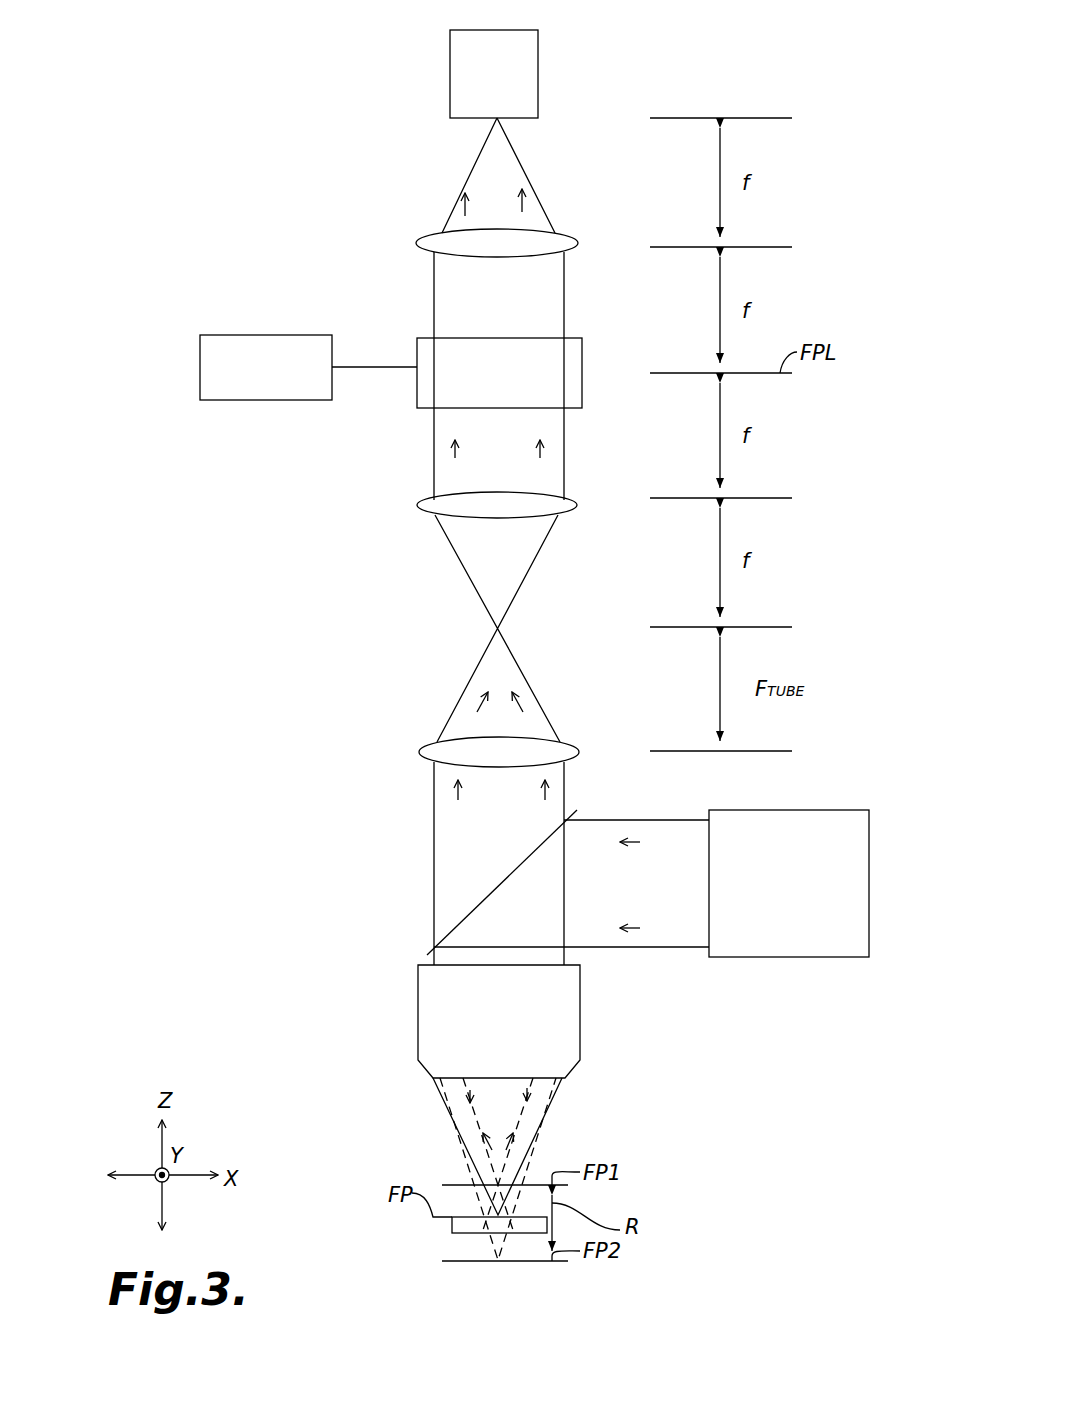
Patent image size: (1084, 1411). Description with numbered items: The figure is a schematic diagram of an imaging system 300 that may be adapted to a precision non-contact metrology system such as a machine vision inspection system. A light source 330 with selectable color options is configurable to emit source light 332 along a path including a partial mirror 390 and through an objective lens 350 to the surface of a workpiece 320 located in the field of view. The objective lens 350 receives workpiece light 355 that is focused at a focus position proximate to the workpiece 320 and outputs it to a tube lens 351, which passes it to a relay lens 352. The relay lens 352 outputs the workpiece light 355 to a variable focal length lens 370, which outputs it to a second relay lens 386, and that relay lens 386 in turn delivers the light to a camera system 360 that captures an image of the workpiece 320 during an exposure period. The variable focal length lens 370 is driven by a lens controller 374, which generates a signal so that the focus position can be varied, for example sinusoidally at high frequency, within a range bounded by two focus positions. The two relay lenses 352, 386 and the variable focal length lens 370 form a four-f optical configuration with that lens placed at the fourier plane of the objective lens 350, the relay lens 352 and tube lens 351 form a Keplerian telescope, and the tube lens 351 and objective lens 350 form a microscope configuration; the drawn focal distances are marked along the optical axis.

The imaging system 300 is at (798, 70).
The camera system 360 is at (538, 62).
The relay lens 386 is at (416, 243).
The workpiece light 355 is at (465, 216).
The variable focal length lens 370 is at (582, 365).
The lens controller 374 is at (229, 400).
The relay lens 352 is at (577, 508).
The tube lens 351 is at (579, 750).
The partial mirror 390 is at (450, 935).
The objective lens 350 is at (580, 1008).
The light source 330 is at (827, 810).
The source light 332 is at (640, 928).
The workpiece 320 is at (452, 1225).